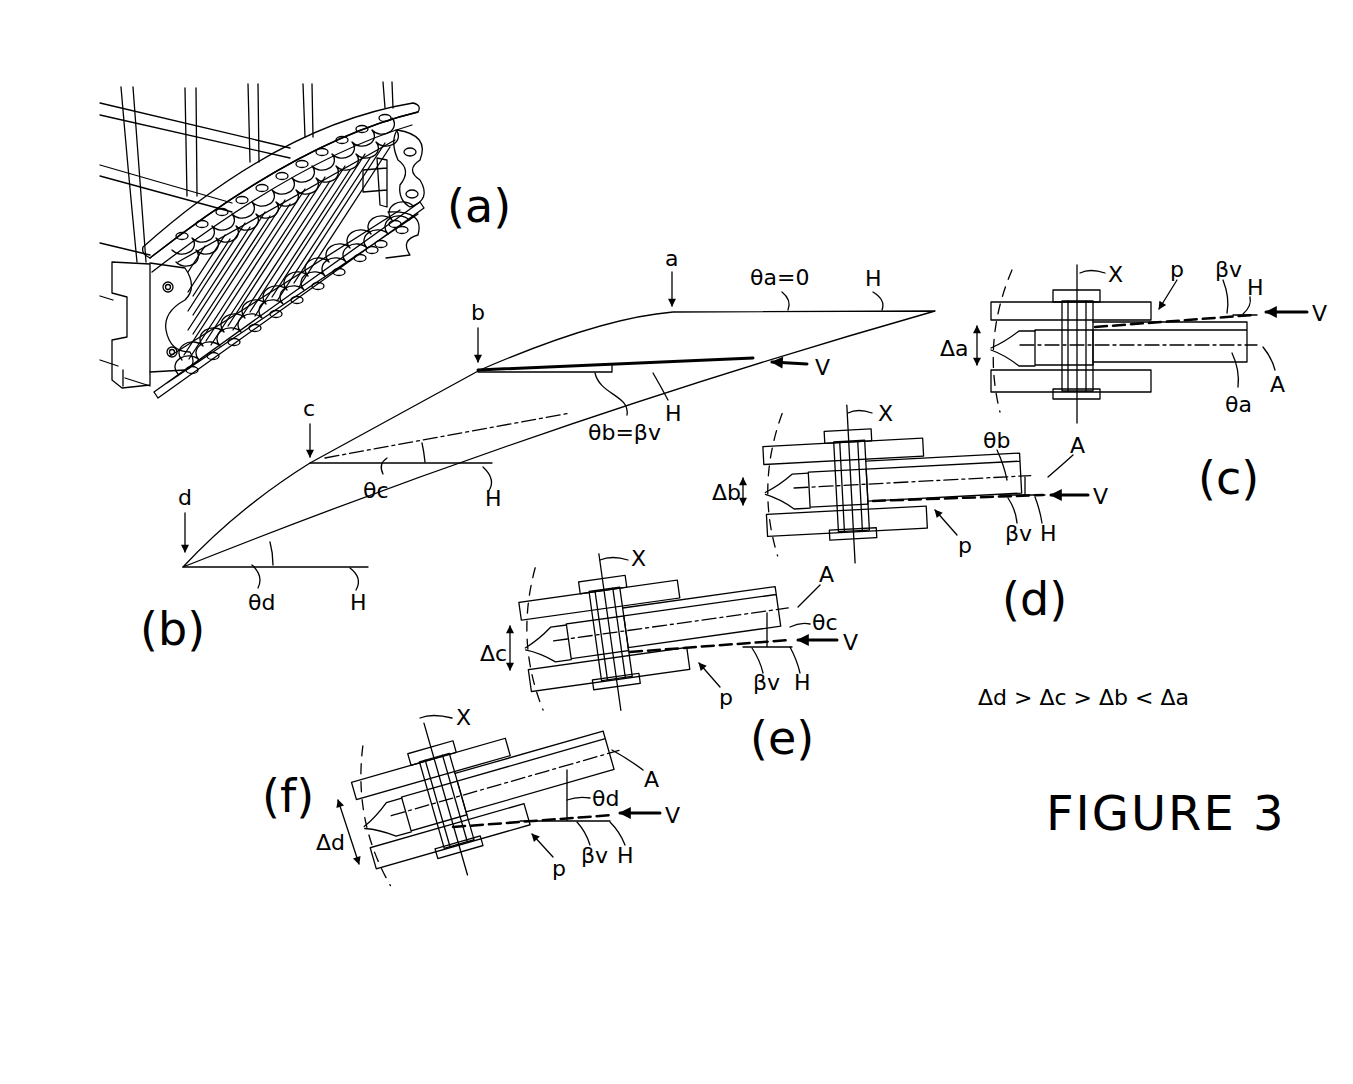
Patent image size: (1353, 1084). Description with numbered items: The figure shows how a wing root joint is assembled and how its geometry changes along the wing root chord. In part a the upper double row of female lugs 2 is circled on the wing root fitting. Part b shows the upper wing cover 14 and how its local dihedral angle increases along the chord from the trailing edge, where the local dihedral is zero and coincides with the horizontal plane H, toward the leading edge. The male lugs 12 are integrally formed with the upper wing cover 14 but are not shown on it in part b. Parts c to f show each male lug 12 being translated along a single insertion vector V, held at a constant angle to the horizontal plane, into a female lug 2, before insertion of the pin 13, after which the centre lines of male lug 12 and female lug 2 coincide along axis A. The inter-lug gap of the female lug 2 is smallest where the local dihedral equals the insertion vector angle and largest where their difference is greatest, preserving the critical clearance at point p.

The upper wing cover 14 is at (440, 393).
The pin 13 is at (1063, 290).
The male lug 12 is at (1177, 337).
The female lug 2 is at (1140, 402).